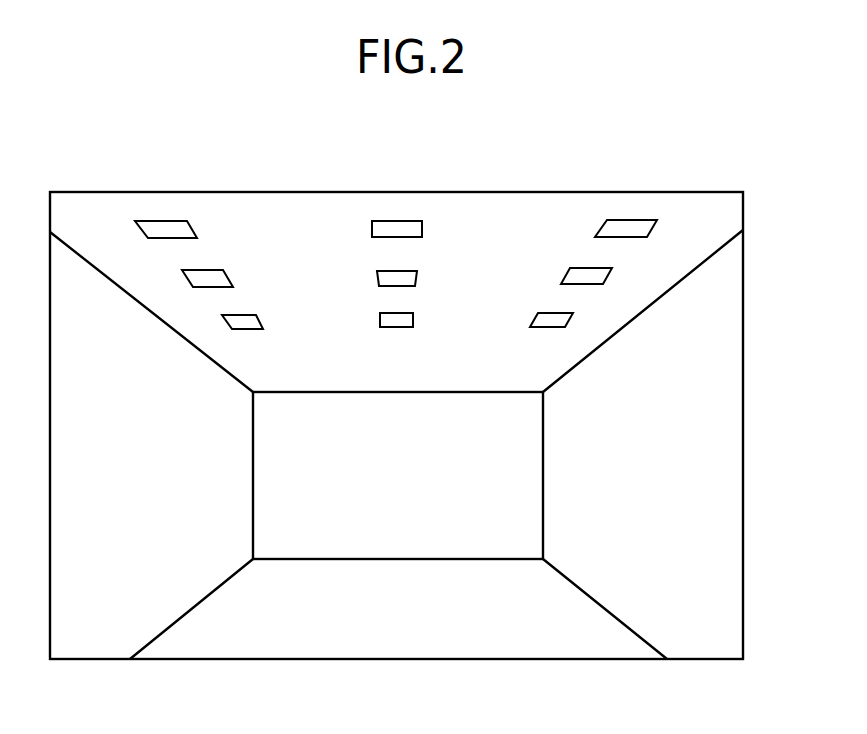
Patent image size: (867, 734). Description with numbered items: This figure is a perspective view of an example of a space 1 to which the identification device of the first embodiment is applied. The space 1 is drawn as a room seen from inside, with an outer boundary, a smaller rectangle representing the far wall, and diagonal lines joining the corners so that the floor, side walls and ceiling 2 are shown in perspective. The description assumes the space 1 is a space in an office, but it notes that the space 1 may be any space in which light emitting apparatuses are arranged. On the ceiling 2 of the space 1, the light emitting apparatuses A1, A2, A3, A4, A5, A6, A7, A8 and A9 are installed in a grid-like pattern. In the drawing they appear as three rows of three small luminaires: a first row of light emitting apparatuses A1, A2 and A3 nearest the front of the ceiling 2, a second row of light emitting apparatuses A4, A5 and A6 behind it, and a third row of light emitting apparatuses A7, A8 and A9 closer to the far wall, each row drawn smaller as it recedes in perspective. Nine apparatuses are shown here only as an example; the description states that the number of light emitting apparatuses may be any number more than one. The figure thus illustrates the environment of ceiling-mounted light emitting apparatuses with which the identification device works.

The space 1 is at (635, 164).
The ceiling 2 is at (530, 222).
The light emitting apparatus A1 is at (197, 230).
The light emitting apparatus A2 is at (422, 229).
The light emitting apparatus A3 is at (652, 228).
The light emitting apparatus A4 is at (233, 279).
The light emitting apparatus A5 is at (416, 278).
The light emitting apparatus A6 is at (608, 276).
The light emitting apparatus A7 is at (263, 322).
The light emitting apparatus A8 is at (413, 320).
The light emitting apparatus A9 is at (569, 320).